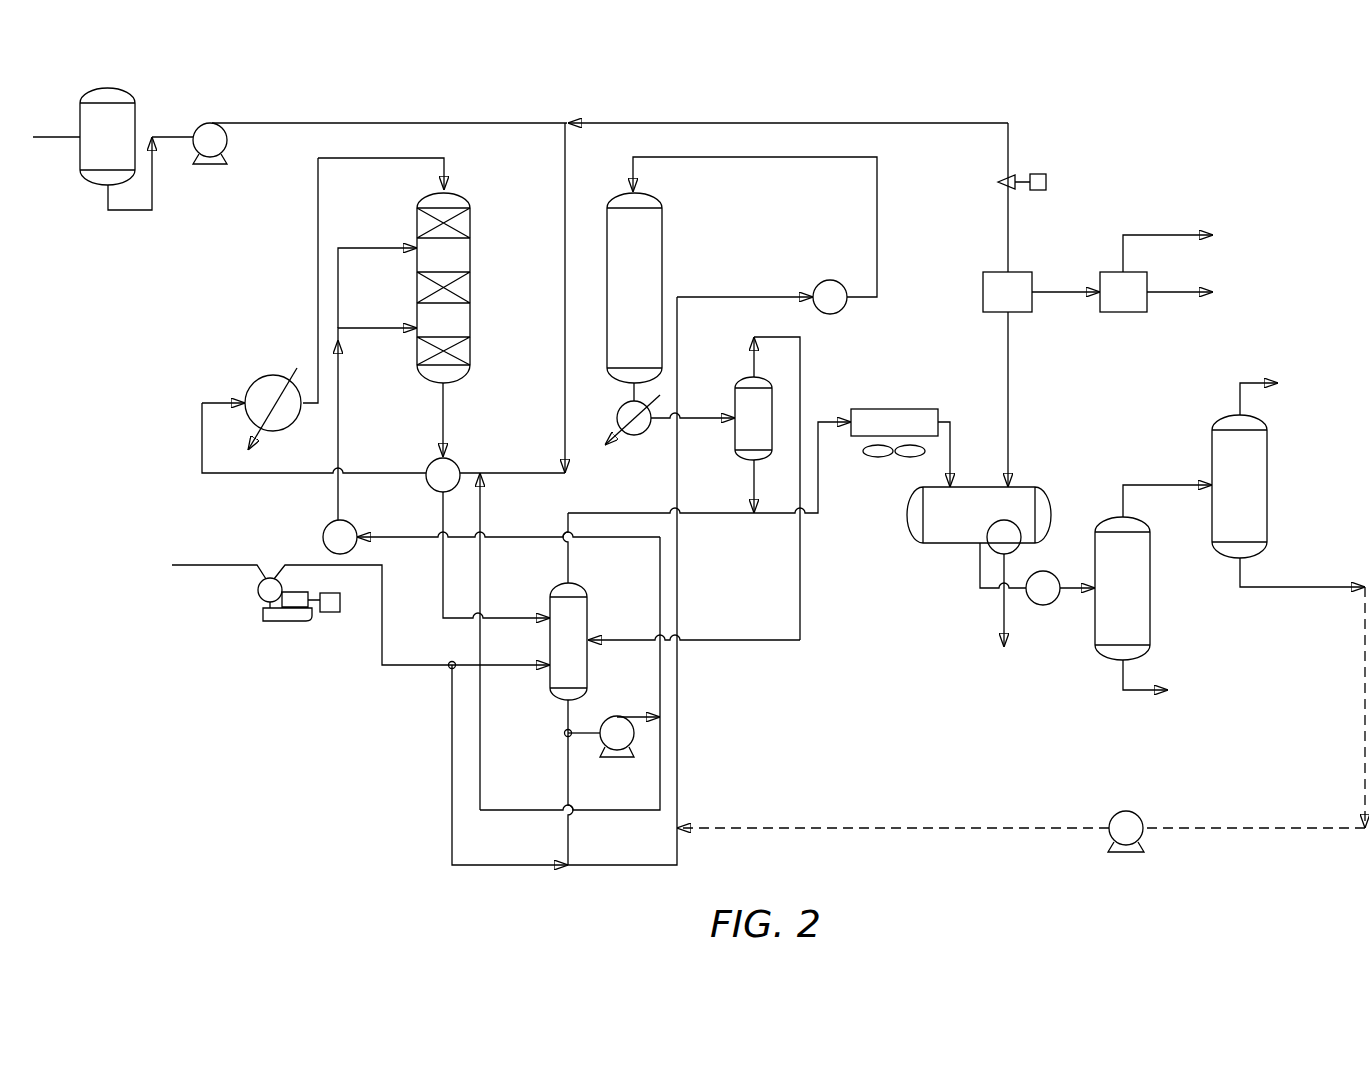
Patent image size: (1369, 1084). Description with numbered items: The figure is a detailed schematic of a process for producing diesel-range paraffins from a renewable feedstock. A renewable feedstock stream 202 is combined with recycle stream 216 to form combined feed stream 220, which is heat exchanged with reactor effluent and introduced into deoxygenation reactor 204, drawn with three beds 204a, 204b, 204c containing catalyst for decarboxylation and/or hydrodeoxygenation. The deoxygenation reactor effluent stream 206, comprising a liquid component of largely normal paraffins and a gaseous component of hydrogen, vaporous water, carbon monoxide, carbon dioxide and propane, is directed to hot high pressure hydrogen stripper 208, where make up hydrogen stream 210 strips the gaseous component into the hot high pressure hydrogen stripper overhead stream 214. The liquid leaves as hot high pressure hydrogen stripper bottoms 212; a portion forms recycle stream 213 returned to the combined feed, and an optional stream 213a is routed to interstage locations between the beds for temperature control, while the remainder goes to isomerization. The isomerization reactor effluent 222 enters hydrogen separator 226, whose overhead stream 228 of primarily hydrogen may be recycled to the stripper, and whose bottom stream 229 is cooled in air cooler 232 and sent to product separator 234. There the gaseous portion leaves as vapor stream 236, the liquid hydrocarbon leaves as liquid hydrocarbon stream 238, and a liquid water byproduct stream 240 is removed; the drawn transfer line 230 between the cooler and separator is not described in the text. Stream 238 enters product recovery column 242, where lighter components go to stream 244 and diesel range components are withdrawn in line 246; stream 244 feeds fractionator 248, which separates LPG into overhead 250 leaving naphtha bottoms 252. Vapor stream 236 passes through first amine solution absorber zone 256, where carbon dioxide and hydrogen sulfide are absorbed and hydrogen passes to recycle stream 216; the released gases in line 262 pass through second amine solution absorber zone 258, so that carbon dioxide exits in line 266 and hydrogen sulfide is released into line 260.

The renewable feedstock stream 202 is at (316, 120).
The deoxygenation reactor 204 is at (489, 271).
The bed 204a is at (472, 222).
The bed 204b is at (472, 285).
The bed 204c is at (472, 345).
The deoxygenation reactor effluent stream 206 is at (447, 415).
The hot high pressure hydrogen stripper 208 is at (575, 582).
The make up hydrogen stream 210 is at (294, 562).
The hot high pressure hydrogen stripper bottoms 212 is at (733, 292).
The recycle stream 213 is at (480, 786).
The optional stream 213a is at (340, 410).
The hot high pressure hydrogen stripper overhead stream 214 is at (620, 513).
The recycle stream 216 is at (708, 120).
The combined feed stream 220 is at (565, 141).
The isomerization reactor effluent 222 is at (628, 394).
The hydrogen separator 226 is at (738, 397).
The overhead stream 228 is at (802, 370).
The bottom stream 229 is at (752, 479).
The cooled stream line 230 is at (950, 420).
The air cooler 232 is at (878, 408).
The product separator 234 is at (1027, 487).
The vapor stream 236 is at (1010, 401).
The liquid hydrocarbon stream 238 is at (980, 578).
The liquid water byproduct stream 240 is at (1002, 623).
The product recovery column 242 is at (1152, 588).
The stream 244 is at (1164, 485).
The line 246 is at (1134, 693).
The fractionator 248 is at (1258, 415).
The overhead 250 is at (1249, 383).
The naphtha bottoms 252 is at (1290, 590).
The first amine solution absorber zone 256 is at (996, 272).
The second amine solution absorber zone 258 is at (1109, 272).
The line 260 is at (1173, 295).
The line 262 is at (1058, 295).
The line 266 is at (1158, 235).